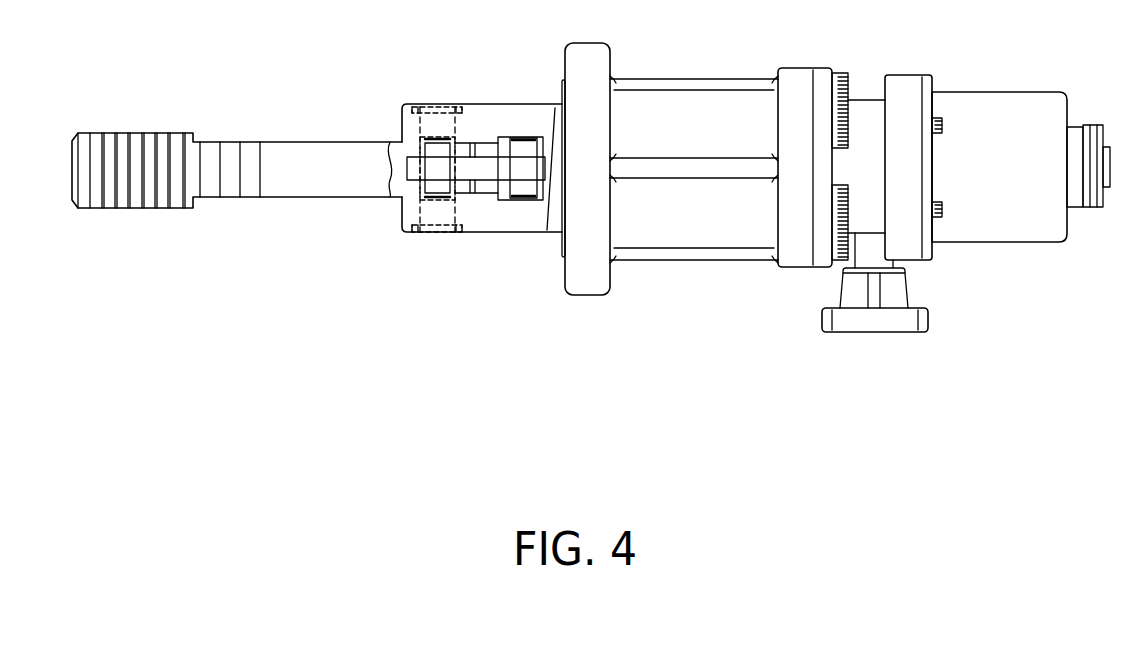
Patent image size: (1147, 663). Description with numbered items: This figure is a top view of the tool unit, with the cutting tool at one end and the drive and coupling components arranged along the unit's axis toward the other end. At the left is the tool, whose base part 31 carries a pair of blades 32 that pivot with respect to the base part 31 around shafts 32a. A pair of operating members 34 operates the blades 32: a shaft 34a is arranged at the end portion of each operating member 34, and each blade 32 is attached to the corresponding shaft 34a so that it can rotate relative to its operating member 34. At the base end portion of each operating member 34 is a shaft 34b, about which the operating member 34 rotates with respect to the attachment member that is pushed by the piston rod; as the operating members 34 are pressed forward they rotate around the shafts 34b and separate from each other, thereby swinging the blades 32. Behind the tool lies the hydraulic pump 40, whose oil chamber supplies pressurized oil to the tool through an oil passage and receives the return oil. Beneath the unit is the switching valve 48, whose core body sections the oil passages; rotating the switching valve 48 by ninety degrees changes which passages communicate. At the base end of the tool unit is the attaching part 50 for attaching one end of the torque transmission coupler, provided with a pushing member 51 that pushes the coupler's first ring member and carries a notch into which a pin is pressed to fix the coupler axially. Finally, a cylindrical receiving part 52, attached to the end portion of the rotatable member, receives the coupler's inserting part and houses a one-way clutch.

The base part 31 is at (523, 113).
The blades 32 is at (293, 142).
The shaft 32a is at (420, 128).
The operating member 34 is at (483, 165).
The shaft 34a is at (437, 182).
The shaft 34b is at (525, 185).
The hydraulic pump 40 is at (995, 92).
The switching valve 48 is at (875, 333).
The attaching part 50 is at (1072, 207).
The pushing member 51 is at (1102, 125).
The receiving part 52 is at (1108, 183).